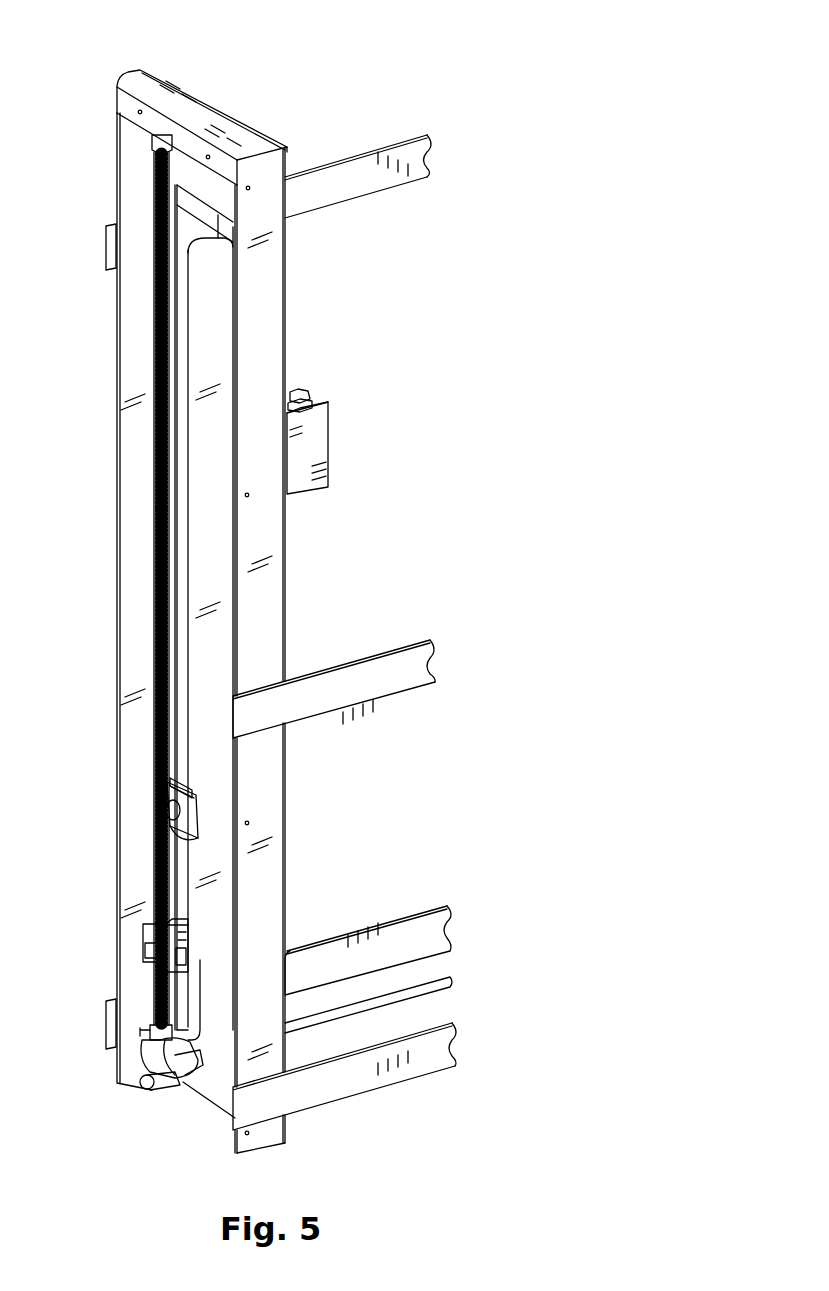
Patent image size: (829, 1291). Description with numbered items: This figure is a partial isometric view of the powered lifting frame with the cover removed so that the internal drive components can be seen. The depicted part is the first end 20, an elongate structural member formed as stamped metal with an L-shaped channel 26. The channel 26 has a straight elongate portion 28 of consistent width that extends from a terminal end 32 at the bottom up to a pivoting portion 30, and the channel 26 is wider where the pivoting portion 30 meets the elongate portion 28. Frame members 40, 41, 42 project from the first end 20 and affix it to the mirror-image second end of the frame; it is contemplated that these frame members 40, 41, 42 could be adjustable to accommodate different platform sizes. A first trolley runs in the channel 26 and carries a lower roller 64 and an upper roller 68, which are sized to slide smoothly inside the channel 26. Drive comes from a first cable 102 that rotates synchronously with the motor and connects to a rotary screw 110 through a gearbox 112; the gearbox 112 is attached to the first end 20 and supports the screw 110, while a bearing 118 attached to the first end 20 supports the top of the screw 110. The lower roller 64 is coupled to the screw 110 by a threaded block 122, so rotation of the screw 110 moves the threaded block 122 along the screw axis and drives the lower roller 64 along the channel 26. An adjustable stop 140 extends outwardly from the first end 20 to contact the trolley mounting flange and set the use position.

The first end 20 is at (237, 110).
The L-shaped channel 26 is at (186, 517).
The elongate portion 28 is at (182, 612).
The pivoting portion 30 is at (196, 238).
The terminal end 32 is at (199, 1030).
The frame member 40 is at (432, 933).
The frame member 41 is at (373, 685).
The frame member 42 is at (346, 184).
The lower roller 64 is at (183, 918).
The upper roller 68 is at (183, 784).
The first cable 102 is at (422, 985).
The rotary screw 110 is at (157, 828).
The gearbox 112 is at (138, 1052).
The bearing 118 is at (156, 145).
The threaded block 122 is at (148, 961).
The adjustable stop 140 is at (313, 452).